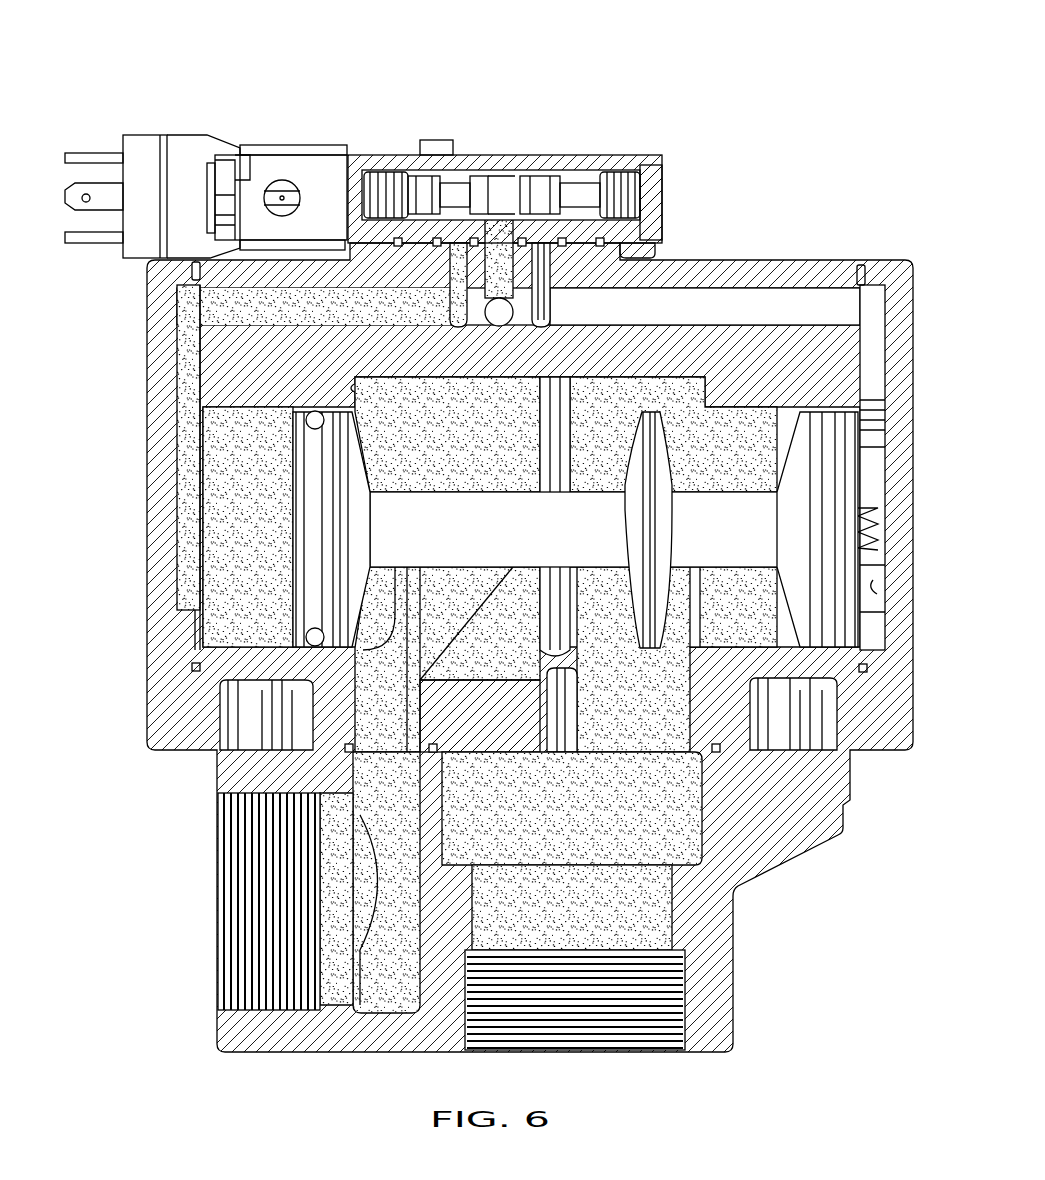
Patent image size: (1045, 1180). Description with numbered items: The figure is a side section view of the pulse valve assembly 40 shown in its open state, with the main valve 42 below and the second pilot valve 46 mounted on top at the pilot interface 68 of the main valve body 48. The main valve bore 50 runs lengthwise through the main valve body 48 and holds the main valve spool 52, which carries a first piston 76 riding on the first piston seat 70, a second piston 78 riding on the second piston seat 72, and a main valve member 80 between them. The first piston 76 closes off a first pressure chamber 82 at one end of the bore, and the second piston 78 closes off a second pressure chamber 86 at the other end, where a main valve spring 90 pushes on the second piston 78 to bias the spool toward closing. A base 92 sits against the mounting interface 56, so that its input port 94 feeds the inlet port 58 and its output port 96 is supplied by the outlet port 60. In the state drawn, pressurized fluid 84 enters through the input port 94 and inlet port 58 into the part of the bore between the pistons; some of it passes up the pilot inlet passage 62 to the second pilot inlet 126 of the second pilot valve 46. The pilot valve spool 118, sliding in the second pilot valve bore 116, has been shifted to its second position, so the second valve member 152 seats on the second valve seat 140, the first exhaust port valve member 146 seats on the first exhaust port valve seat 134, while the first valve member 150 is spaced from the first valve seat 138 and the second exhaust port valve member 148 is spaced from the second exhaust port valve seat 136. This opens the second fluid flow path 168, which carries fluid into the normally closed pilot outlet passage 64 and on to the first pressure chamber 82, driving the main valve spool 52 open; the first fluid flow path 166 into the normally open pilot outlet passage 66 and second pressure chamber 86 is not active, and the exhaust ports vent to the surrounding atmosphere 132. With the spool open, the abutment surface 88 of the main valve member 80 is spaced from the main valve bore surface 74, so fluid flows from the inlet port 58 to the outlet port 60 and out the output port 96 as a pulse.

The pulse valve assembly 40 is at (107, 578).
The main valve 42 is at (147, 462).
The second pilot valve 46 is at (573, 147).
The main valve body 48 is at (223, 373).
The main valve bore 50 is at (672, 410).
The main valve spool 52 is at (390, 523).
The mounting interface 56 is at (490, 762).
The inlet port 58 is at (350, 705).
The outlet port 60 is at (643, 720).
The pilot inlet passage 62 is at (352, 390).
The normally closed pilot outlet passage 64 is at (217, 313).
The normally open pilot outlet passage 66 is at (810, 307).
The pilot interface 68 is at (440, 303).
The first piston seat 70 is at (253, 405).
The second piston seat 72 is at (833, 385).
The main valve bore surface 74 is at (543, 395).
The first piston 76 is at (330, 582).
The second piston 78 is at (802, 577).
The main valve member 80 is at (655, 655).
The first pressure chamber 82 is at (243, 538).
The pressurized fluid 84 is at (628, 845).
The second pressure chamber 86 is at (880, 588).
The abutment surface 88 is at (638, 620).
The main valve spring 90 is at (867, 508).
The base 92 is at (787, 862).
The input port 94 is at (350, 902).
The output port 96 is at (643, 910).
The second pilot valve bore 116 is at (420, 190).
The pilot valve spool 118 is at (585, 190).
The second pilot inlet 126 is at (492, 175).
The surrounding atmosphere 132 is at (767, 182).
The first exhaust port valve seat 134 is at (418, 172).
The second exhaust port valve seat 136 is at (562, 172).
The first valve seat 138 is at (480, 215).
The second valve seat 140 is at (519, 195).
The first exhaust port valve member 146 is at (440, 185).
The second exhaust port valve member 148 is at (553, 197).
The first valve member 150 is at (467, 195).
The second valve member 152 is at (512, 195).
The first fluid flow path 166 is at (635, 307).
The second fluid flow path 168 is at (190, 275).